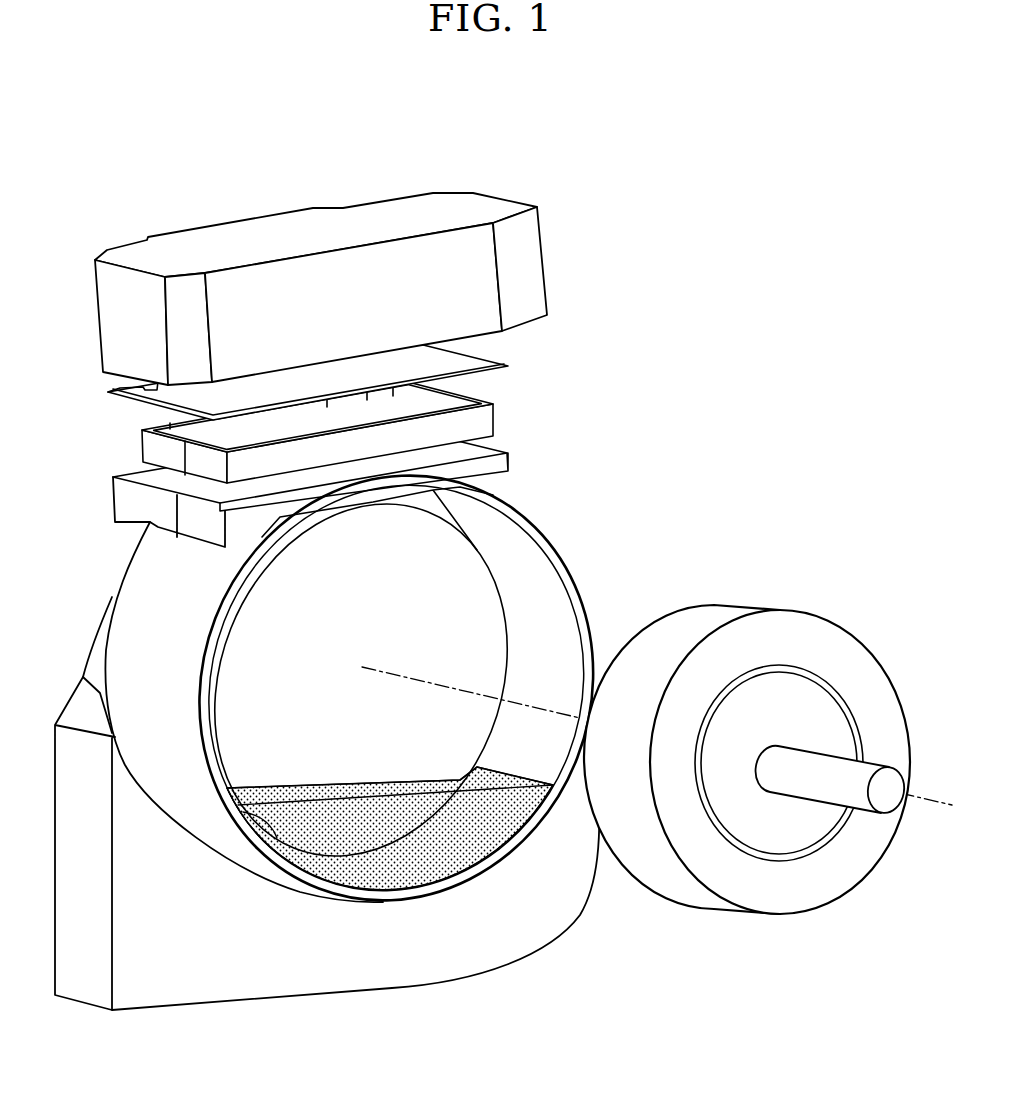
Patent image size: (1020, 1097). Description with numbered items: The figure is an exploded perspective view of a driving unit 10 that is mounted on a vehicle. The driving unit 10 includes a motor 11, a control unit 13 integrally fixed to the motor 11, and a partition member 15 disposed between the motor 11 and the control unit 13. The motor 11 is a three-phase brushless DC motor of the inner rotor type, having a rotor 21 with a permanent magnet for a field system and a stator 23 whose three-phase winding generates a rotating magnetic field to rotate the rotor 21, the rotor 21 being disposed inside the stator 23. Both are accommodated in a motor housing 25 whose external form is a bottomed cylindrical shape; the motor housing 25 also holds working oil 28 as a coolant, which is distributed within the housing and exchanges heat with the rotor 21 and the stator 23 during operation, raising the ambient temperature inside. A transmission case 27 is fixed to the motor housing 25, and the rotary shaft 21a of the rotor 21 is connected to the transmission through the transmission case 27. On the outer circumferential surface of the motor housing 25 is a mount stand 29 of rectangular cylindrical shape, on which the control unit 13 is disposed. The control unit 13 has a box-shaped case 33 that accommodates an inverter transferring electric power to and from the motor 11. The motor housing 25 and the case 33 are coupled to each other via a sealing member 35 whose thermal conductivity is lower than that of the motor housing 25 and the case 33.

The driving unit 10 is at (745, 165).
The motor 11 is at (580, 485).
The control unit 13 is at (324, 238).
The partition member 15 is at (488, 402).
The rotor 21 is at (802, 693).
The rotary shaft 21a is at (828, 763).
The stator 23 is at (757, 610).
The motor housing 25 is at (586, 568).
The transmission case 27 is at (83, 676).
The working oil 28 is at (416, 872).
The mount stand 29 is at (507, 452).
The case 33 is at (372, 213).
The sealing member 35 is at (497, 362).